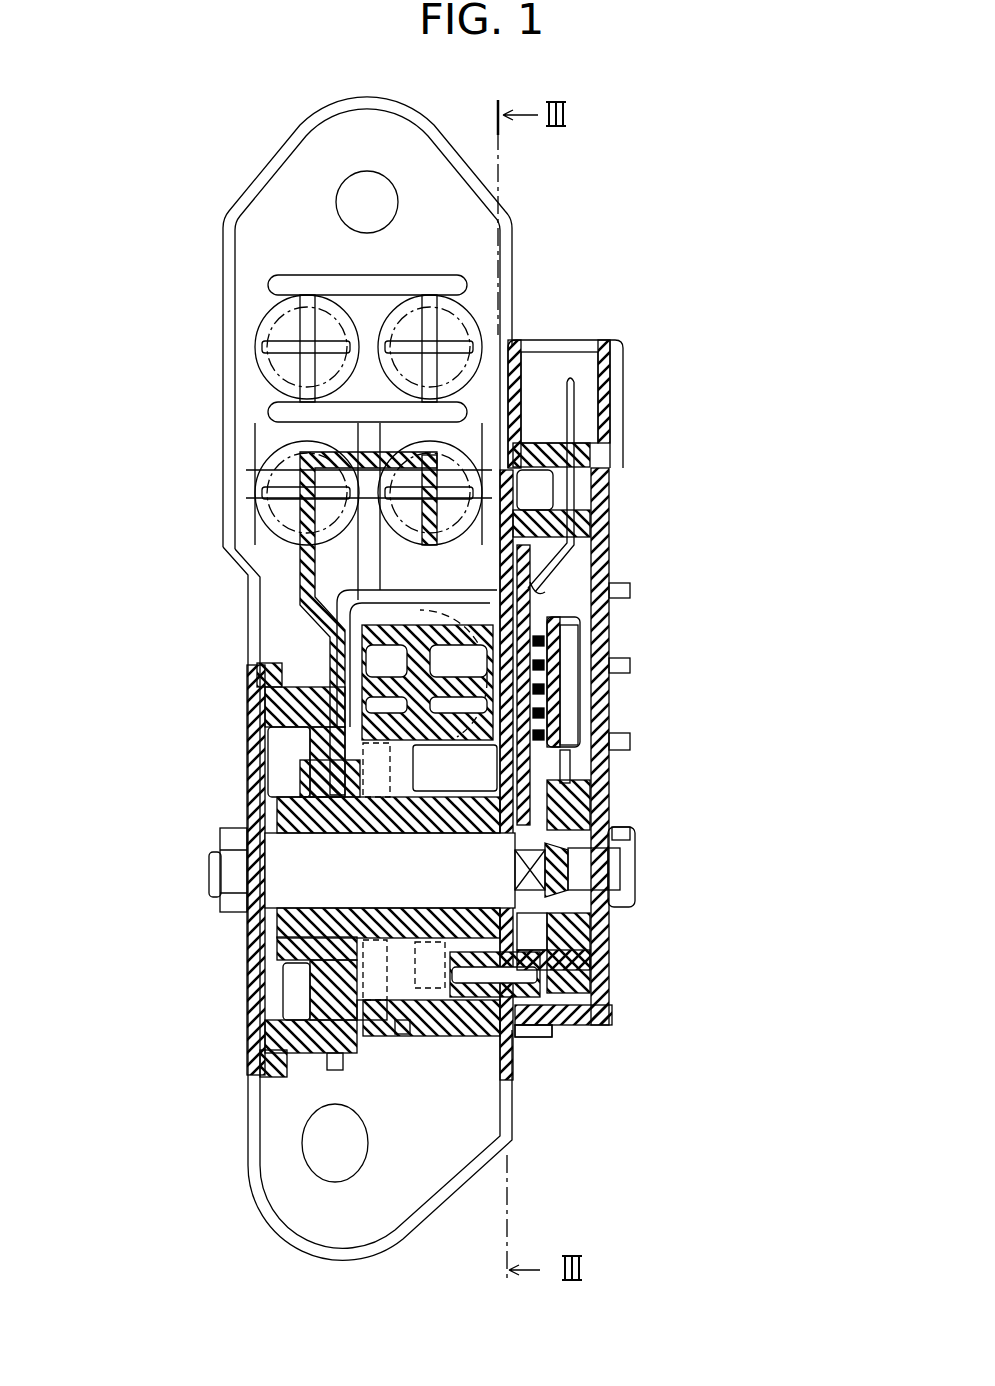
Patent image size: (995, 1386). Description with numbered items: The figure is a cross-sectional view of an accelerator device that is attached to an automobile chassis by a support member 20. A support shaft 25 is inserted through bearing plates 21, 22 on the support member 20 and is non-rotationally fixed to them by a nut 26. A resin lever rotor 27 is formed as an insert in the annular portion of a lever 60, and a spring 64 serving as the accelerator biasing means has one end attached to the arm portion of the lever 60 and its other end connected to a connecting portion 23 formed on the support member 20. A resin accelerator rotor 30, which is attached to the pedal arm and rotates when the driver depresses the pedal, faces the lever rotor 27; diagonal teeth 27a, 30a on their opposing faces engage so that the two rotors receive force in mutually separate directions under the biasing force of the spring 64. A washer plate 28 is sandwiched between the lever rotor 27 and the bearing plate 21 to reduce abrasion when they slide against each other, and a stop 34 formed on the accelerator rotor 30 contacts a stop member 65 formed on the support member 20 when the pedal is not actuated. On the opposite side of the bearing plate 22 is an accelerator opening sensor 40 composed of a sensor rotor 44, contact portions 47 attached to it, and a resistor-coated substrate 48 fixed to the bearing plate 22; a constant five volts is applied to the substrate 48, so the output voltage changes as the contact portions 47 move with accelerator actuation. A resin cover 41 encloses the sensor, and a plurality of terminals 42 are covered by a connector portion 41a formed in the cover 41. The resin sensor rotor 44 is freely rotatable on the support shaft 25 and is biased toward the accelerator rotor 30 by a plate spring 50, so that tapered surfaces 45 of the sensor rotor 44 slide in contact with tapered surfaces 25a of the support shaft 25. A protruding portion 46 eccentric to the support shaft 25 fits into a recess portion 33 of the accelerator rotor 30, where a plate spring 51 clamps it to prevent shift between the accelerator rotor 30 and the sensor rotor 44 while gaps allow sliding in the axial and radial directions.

The support member 20 is at (256, 183).
The bearing plate 21 is at (250, 748).
The bearing plate 22 is at (504, 498).
The connecting portion 23 is at (306, 308).
The support shaft 25 is at (313, 888).
The tapered surfaces 25a is at (550, 822).
The nut 26 is at (232, 830).
The lever rotor 27 is at (288, 1042).
The diagonal teeth 27a is at (368, 1040).
The washer plate 28 is at (276, 1078).
The accelerator rotor 30 is at (419, 1040).
The diagonal teeth 30a is at (404, 1036).
The recess portion 33 is at (440, 1043).
The stop 34 is at (368, 636).
The accelerator opening sensor 40 is at (615, 520).
The cover 41 is at (597, 622).
The connector portion 41a is at (623, 347).
The terminals 42 is at (572, 400).
The sensor rotor 44 is at (597, 900).
The tapered surfaces 45 is at (622, 872).
The protruding portion 46 is at (518, 1035).
The contact portions 47 is at (540, 650).
The substrate 48 is at (570, 590).
The plate spring 50 is at (577, 764).
The plate spring 51 is at (535, 932).
The lever 60 is at (303, 603).
The spring 64 is at (255, 400).
The stop member 65 is at (392, 617).